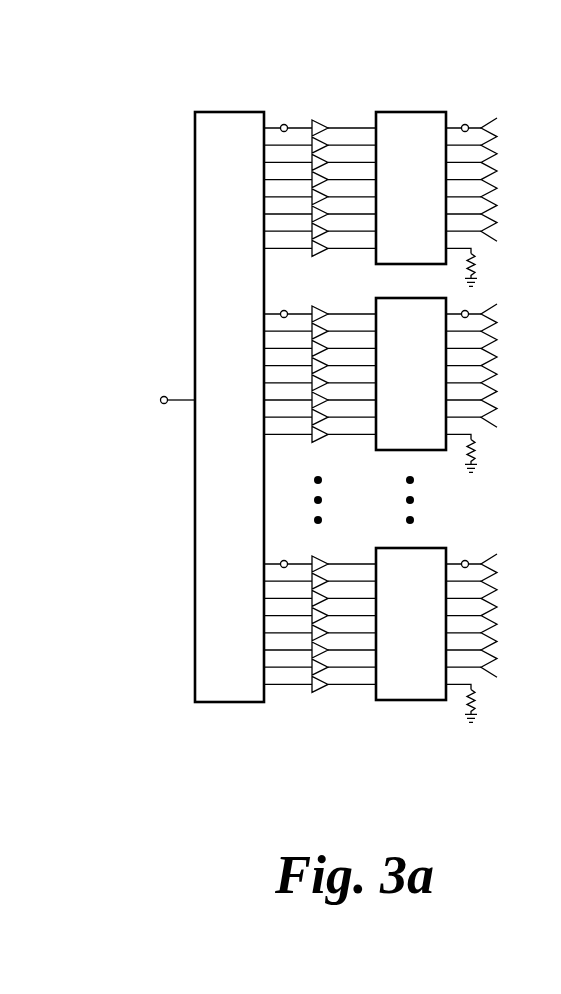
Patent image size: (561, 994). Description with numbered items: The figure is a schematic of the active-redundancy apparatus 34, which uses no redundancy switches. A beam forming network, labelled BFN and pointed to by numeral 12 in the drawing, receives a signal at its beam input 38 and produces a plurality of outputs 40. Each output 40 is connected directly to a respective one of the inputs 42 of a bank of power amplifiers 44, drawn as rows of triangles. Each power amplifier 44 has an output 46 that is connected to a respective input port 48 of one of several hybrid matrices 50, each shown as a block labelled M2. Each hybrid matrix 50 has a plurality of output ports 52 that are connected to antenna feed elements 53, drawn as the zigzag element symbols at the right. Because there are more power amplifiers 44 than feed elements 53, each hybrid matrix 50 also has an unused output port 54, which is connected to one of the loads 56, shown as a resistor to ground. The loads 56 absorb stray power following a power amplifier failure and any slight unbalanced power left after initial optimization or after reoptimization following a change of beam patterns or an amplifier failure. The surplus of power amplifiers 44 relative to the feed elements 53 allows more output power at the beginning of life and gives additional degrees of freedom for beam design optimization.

The beam forming network (BFN) 12 is at (221, 702).
The apparatus 34 is at (410, 93).
The beam input 38 is at (160, 398).
The outputs 40 is at (270, 690).
The inputs 42 is at (295, 690).
The power amplifiers 44 is at (313, 690).
The output 46 is at (331, 690).
The input ports 48 is at (363, 690).
The hybrid matrices 50 is at (413, 708).
The output ports 52 is at (482, 683).
The antenna feed elements 53 is at (497, 680).
The unused output port 54 is at (455, 690).
The loads 56 is at (473, 730).